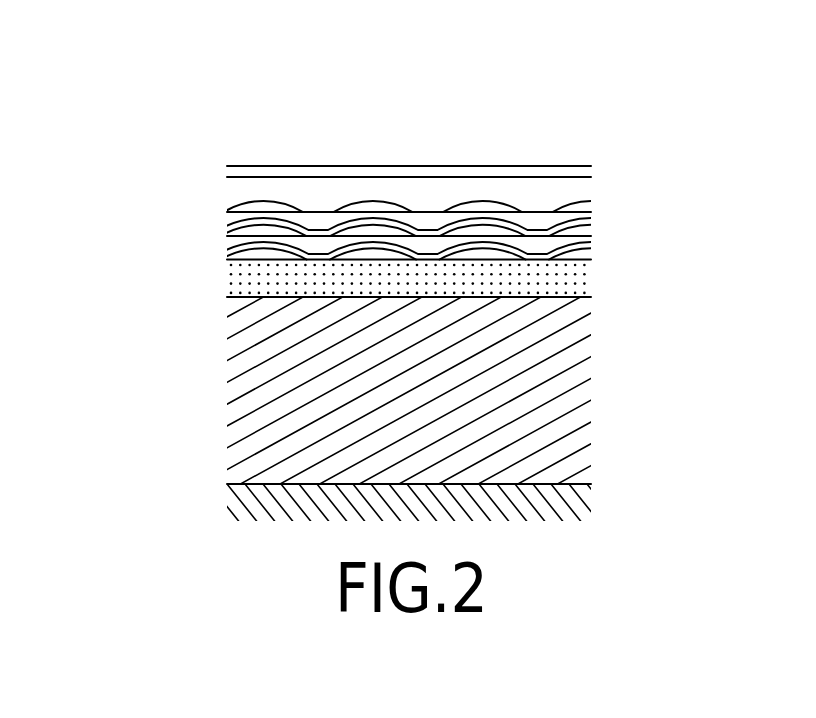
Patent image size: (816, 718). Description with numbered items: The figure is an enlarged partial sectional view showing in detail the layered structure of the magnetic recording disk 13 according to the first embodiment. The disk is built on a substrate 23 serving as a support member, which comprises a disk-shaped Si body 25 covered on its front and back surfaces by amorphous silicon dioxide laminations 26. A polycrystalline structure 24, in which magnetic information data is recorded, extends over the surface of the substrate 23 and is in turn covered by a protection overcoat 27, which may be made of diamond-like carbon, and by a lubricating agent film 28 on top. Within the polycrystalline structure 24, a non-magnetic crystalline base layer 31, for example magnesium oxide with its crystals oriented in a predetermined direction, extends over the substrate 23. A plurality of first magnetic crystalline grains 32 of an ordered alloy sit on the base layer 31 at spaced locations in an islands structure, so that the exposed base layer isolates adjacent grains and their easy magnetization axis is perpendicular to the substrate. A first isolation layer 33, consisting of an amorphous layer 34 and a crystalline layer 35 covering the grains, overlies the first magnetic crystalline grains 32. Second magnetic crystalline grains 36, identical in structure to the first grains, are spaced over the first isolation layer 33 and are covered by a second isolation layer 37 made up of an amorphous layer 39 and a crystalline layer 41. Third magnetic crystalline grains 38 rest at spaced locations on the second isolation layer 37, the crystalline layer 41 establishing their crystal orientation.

The magnetic recording disk 13 is at (484, 93).
The substrate 23 is at (663, 293).
The polycrystalline structure 24 is at (123, 283).
The Si body 25 is at (590, 481).
The amorphous SiO2 lamination 26 is at (590, 294).
The protection overcoat 27 is at (590, 177).
The lubricating agent film 28 is at (570, 166).
The base layer 31 is at (252, 247).
The first magnetic crystalline grains 32 is at (331, 250).
The first isolation layer 33 is at (703, 203).
The amorphous layer 34 is at (590, 238).
The crystalline layer 35 is at (591, 230).
The second magnetic crystalline grains 36 is at (372, 223).
The second isolation layer 37 is at (128, 135).
The third magnetic crystalline grains 38 is at (262, 203).
The amorphous layer 39 is at (237, 226).
The crystalline layer 41 is at (237, 211).